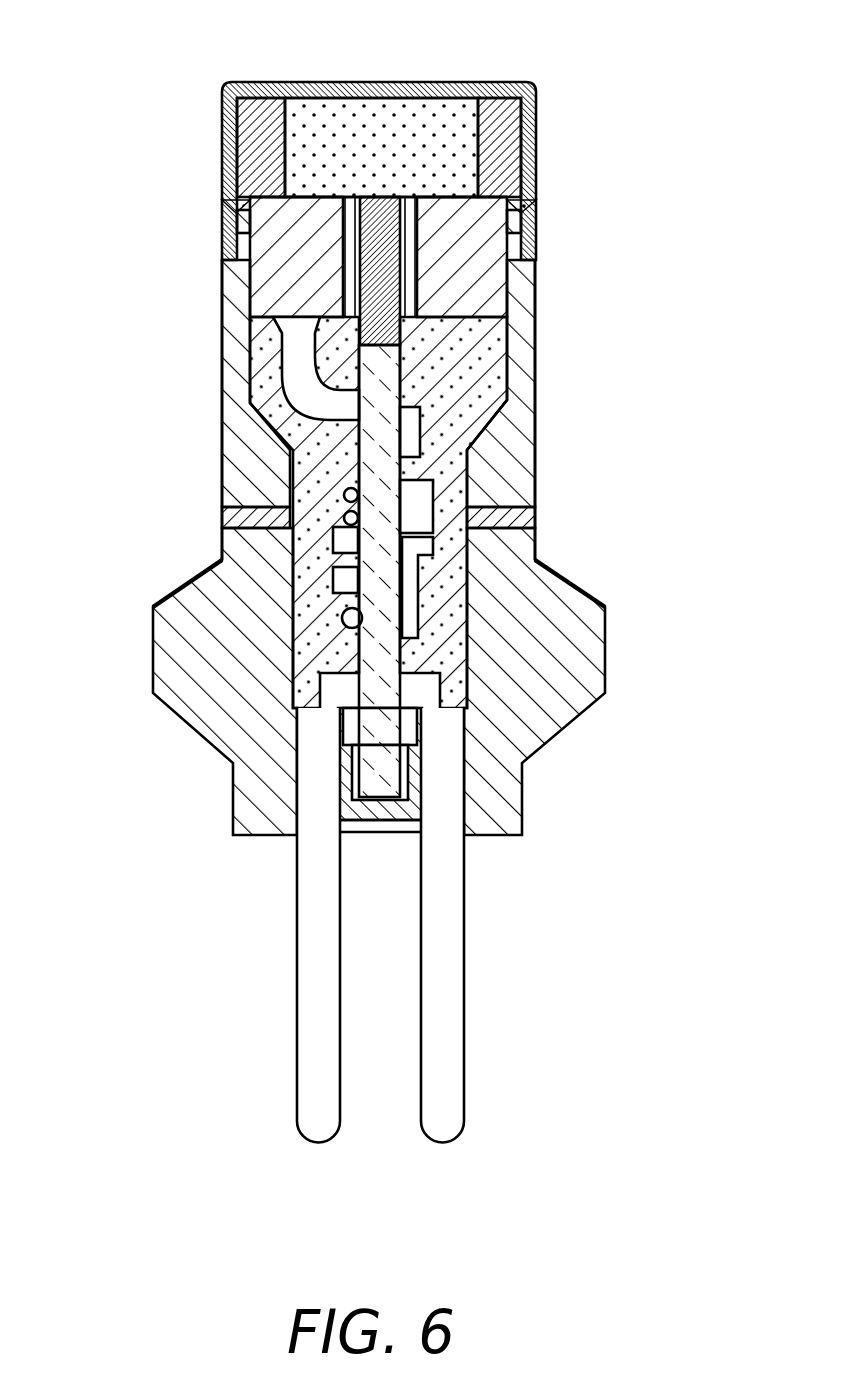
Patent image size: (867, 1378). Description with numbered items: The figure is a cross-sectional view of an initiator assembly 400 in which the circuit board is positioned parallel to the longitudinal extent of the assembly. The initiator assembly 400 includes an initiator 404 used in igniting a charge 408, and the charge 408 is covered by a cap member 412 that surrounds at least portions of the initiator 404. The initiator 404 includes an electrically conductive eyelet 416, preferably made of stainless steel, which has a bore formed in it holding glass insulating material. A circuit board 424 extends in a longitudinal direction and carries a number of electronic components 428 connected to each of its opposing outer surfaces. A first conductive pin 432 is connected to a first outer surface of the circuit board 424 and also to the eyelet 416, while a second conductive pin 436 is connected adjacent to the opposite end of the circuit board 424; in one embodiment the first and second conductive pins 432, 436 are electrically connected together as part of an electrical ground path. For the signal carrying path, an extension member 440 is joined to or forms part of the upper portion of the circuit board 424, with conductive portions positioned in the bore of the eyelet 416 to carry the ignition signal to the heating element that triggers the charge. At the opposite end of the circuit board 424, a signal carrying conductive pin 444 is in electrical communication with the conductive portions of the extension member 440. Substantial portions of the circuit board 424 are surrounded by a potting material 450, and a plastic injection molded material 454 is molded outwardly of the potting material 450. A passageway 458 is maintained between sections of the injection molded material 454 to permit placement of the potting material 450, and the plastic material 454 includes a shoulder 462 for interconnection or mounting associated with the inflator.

The initiator assembly 400 is at (578, 197).
The initiator 404 is at (252, 327).
The charge 408 is at (350, 125).
The cap member 412 is at (533, 145).
The electrically conductive eyelet 416 is at (470, 262).
The circuit board 424 is at (382, 463).
The electronic components 428 is at (410, 585).
The first conductive pin 432 is at (302, 370).
The second conductive pin 436 is at (315, 968).
The extension member 440 is at (373, 272).
The signal carrying conductive pin 444 is at (445, 957).
The potting material 450 is at (478, 357).
The injection molded material 454 is at (577, 658).
The passageway 458 is at (262, 530).
The shoulder 462 is at (595, 592).